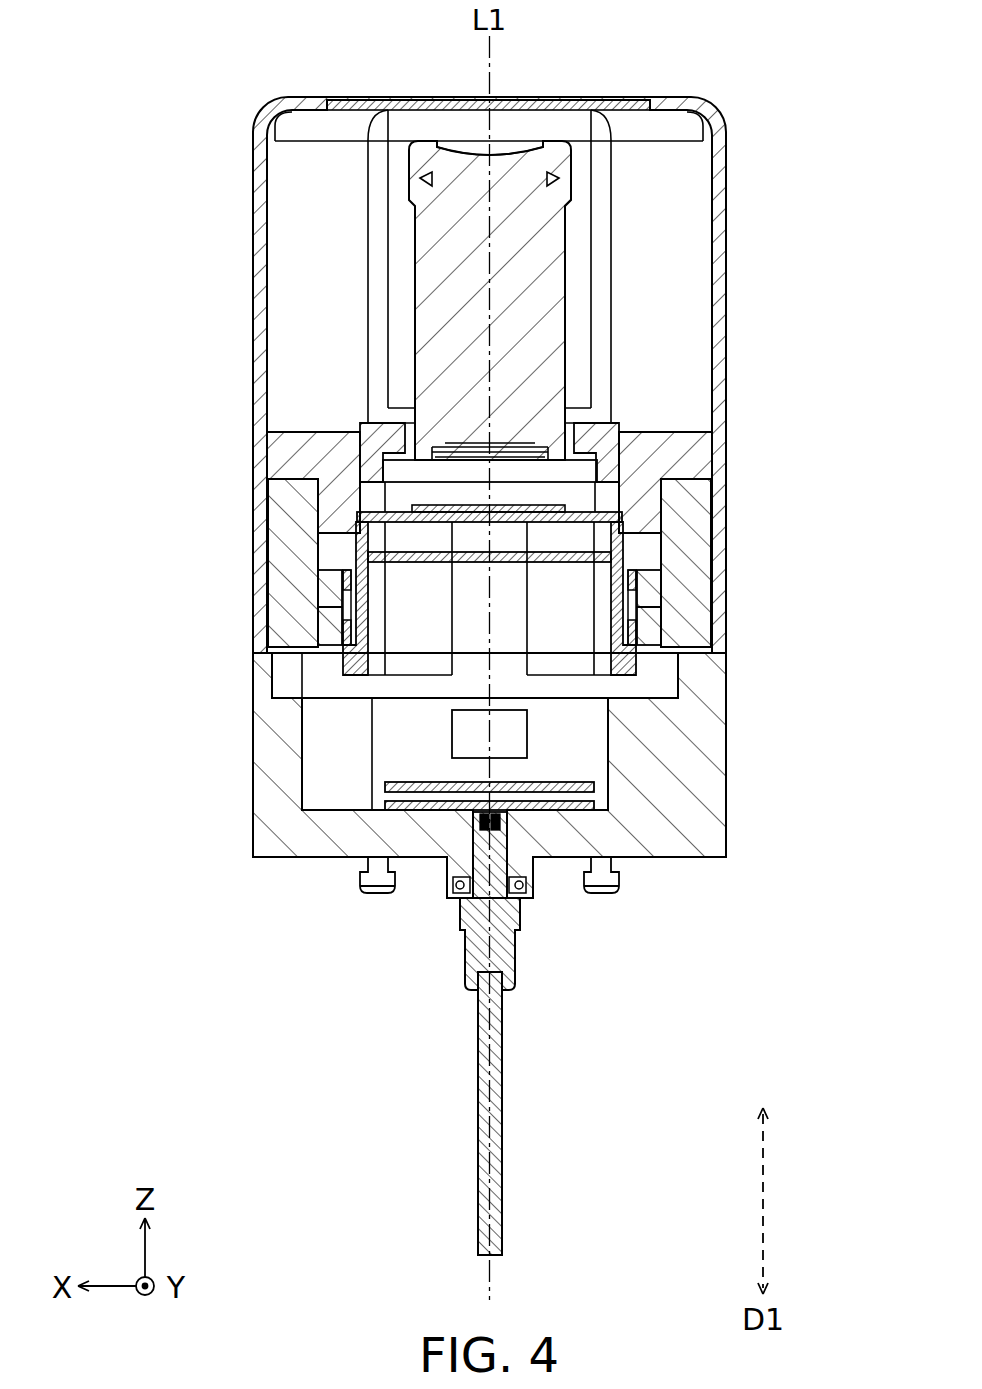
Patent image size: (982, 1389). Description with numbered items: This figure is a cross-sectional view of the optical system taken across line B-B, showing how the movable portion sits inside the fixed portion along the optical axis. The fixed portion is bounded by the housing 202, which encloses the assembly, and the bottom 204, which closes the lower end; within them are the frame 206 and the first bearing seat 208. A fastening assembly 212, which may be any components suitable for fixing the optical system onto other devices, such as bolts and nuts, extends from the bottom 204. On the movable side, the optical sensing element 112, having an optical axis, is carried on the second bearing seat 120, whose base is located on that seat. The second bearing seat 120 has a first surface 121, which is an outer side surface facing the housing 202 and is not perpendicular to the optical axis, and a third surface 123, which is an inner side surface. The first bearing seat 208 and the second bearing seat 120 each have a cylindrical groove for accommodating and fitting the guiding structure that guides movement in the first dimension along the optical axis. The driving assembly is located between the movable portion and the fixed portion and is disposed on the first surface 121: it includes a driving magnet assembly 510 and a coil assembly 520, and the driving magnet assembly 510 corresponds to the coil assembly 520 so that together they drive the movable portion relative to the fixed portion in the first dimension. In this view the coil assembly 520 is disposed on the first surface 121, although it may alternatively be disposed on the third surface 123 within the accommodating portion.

The housing 202 is at (722, 174).
The bottom 204 is at (712, 826).
The frame 206 is at (695, 500).
The first bearing seat 208 is at (282, 458).
The optical sensing element 112 is at (577, 512).
The second bearing seat 120 is at (604, 683).
The first surface 121 is at (623, 540).
The third surface 123 is at (606, 702).
The driving magnet assembly 510 is at (658, 585).
The coil assembly 520 is at (636, 622).
The fastening assembly 212 is at (560, 961).